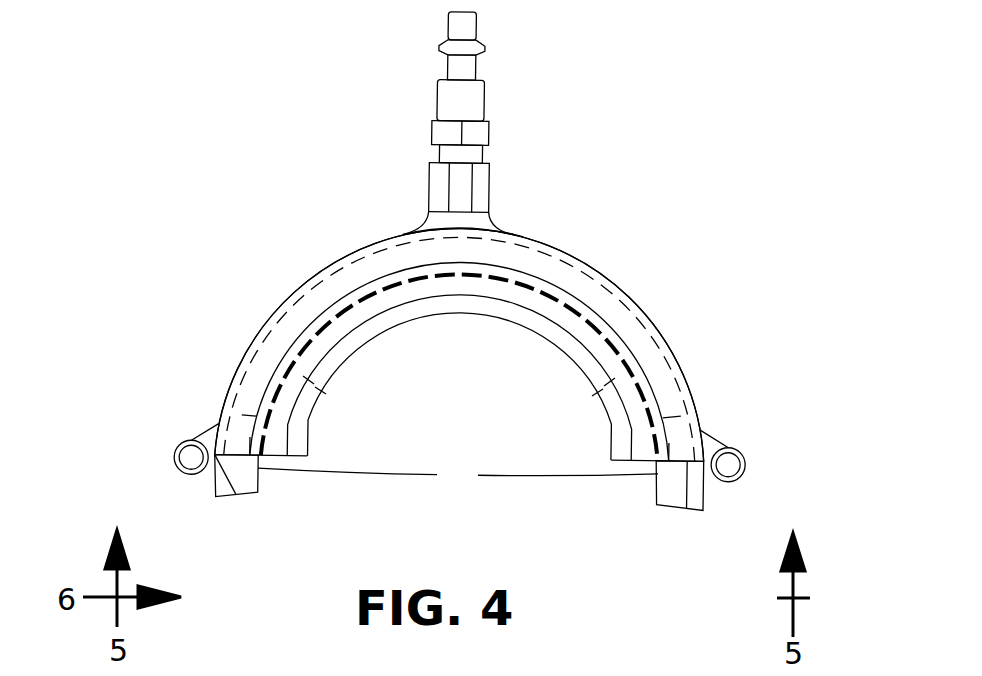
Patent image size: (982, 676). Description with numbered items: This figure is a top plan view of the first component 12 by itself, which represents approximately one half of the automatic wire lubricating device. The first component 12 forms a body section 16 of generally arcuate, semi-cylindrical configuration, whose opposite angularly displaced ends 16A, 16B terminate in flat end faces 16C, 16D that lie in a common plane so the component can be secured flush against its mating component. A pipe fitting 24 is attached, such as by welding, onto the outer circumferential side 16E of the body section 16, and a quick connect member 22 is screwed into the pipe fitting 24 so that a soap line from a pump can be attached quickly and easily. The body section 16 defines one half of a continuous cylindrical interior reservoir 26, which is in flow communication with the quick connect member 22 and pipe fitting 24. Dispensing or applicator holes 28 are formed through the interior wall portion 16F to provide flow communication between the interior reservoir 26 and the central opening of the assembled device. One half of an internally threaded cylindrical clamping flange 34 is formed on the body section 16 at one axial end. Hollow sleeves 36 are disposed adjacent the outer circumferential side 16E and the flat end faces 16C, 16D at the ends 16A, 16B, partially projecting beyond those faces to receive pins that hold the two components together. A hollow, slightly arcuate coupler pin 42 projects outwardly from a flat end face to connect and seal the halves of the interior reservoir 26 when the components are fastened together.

The first component 12 is at (740, 303).
The body section 16 is at (267, 315).
The angularly displaced end 16A is at (700, 416).
The angularly displaced end 16B is at (200, 403).
The flat end face 16C is at (688, 509).
The flat end face 16D is at (216, 498).
The outer circumferential side 16E is at (530, 238).
The interior wall portion 16F is at (365, 343).
The quick connect member 22 is at (437, 97).
The pipe fitting 24 is at (430, 195).
The interior reservoir 26 is at (578, 282).
The dispensing or applicator holes 28 is at (602, 394).
The internally threaded cylindrical clamping flange 34 is at (335, 297).
The sleeves 36 is at (174, 452).
The coupler pin 42 is at (458, 480).